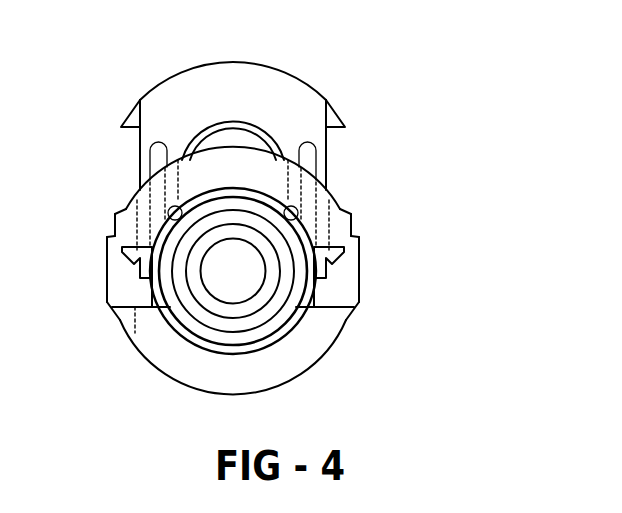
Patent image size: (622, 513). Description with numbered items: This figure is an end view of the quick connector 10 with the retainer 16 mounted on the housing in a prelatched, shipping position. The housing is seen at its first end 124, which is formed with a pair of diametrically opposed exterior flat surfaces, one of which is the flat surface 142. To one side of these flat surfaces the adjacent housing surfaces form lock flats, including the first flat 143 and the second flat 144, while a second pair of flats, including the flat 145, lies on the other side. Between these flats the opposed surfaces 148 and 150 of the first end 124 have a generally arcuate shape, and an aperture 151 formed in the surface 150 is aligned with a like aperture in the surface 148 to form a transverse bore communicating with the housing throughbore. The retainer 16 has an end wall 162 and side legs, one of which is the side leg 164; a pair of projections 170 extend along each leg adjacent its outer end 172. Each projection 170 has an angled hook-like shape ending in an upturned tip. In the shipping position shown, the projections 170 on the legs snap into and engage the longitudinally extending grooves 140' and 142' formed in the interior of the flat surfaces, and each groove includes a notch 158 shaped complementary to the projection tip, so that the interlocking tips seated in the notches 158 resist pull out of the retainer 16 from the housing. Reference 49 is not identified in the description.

The quick connector 10 is at (380, 102).
The retainer 16 is at (60, 172).
The hidden passage 49 is at (330, 183).
The first end 124 is at (238, 376).
The groove 140' is at (390, 274).
The flat surface 142 is at (77, 277).
The groove 142' is at (75, 271).
The first flat 143 is at (350, 324).
The second flat 144 is at (119, 305).
The flat 145 is at (116, 220).
The arcuate surface 148 is at (216, 152).
The arcuate surface 150 is at (157, 357).
The aperture 151 is at (329, 307).
The notch 158 is at (0, 440).
The end wall 162 is at (272, 67).
The side leg 164 is at (0, 500).
The projection 170 is at (208, 90).
The outer end 172 is at (111, 90).